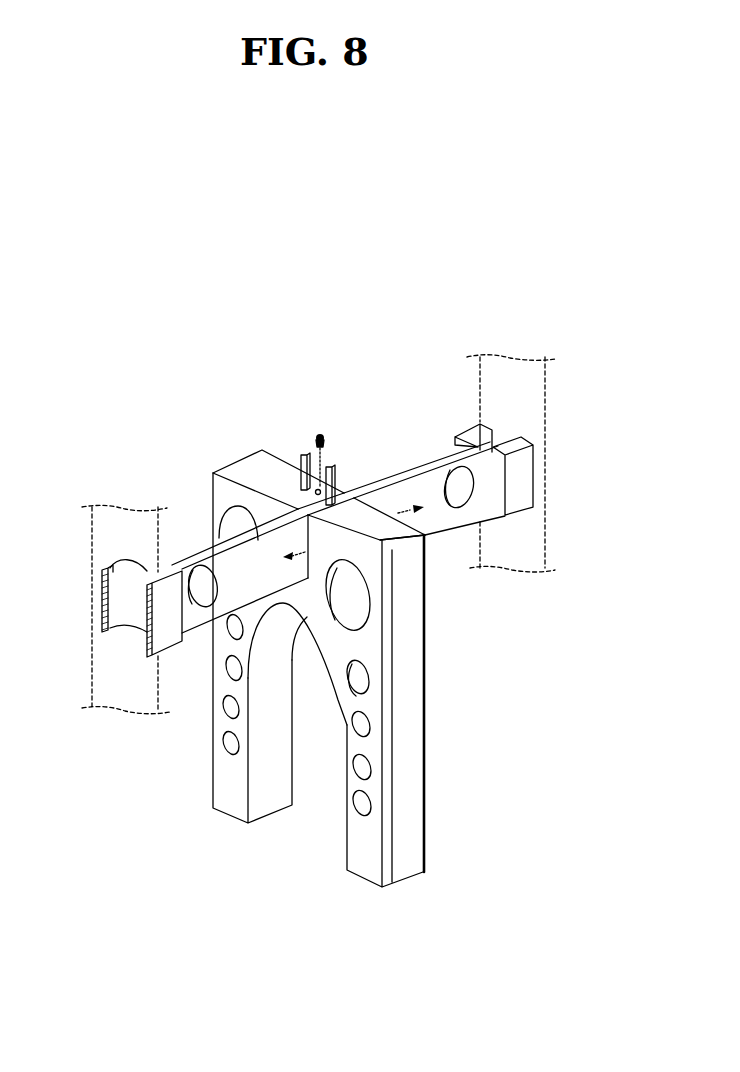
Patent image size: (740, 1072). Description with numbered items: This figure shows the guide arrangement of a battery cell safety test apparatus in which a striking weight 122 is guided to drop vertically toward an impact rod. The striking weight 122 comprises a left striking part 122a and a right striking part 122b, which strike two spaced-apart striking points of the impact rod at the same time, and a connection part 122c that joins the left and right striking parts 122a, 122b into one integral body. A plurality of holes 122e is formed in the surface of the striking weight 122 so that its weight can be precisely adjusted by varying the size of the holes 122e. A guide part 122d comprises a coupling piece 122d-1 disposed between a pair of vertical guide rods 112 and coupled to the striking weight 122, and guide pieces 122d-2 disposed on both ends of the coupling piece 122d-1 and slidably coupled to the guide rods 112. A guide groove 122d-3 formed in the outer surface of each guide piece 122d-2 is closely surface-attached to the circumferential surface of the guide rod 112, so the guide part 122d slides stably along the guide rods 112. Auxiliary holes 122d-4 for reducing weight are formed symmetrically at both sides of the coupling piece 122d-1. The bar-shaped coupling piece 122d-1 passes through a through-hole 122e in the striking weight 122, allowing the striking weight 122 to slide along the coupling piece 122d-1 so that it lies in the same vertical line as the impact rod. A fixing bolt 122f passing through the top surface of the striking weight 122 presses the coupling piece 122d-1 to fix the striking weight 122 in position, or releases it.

The guide rod 112 is at (545, 411).
The striking weight 122 is at (419, 278).
The left striking part 122a is at (232, 802).
The right striking part 122b is at (366, 860).
The connection part 122c is at (316, 600).
The guide part 122d is at (170, 432).
The coupling piece 122d-1 is at (182, 570).
The guide piece 122d-2 is at (112, 565).
The guide groove 122d-3 is at (118, 603).
The auxiliary hole 122d-4 is at (471, 505).
The hole 122e is at (284, 500).
The fixing bolt 122f is at (327, 440).